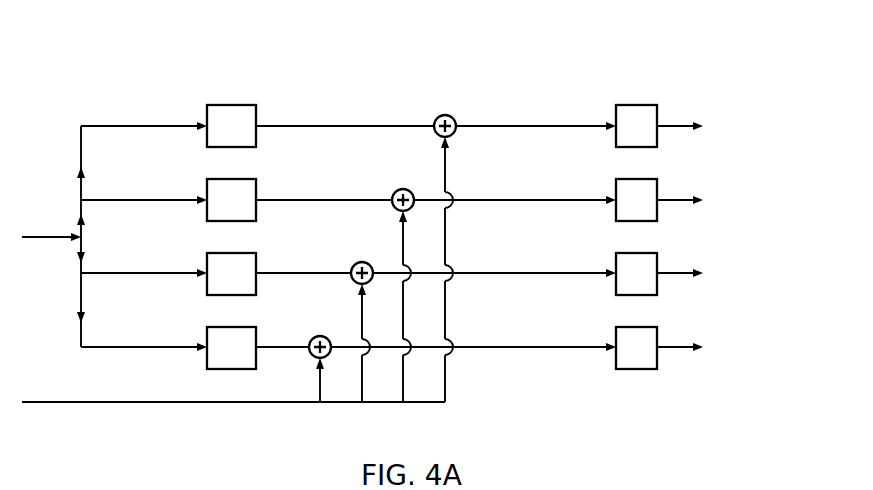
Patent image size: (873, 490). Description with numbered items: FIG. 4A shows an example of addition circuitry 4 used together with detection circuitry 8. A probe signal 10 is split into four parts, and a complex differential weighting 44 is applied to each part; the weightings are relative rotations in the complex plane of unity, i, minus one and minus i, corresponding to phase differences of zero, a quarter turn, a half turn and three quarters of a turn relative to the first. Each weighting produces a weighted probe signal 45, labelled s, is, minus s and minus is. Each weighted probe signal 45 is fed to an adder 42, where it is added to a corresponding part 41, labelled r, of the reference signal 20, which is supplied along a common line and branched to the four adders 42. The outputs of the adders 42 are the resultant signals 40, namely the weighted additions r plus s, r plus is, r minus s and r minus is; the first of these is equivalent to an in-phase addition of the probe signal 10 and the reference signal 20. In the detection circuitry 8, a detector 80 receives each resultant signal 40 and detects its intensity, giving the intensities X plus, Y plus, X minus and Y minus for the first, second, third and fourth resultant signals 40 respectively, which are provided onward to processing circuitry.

The addition circuitry 4 is at (473, 64).
The detection circuitry 8 is at (655, 64).
The probe signal 10 is at (33, 238).
The reference signal 20 is at (190, 403).
The resultant signal 40 is at (573, 127).
The corresponding part of the reference signal 41 is at (447, 175).
The adder 42 is at (441, 115).
The complex differential weighting 44 is at (206, 105).
The weighted probe signal 45 is at (282, 126).
The detector 80 is at (616, 105).